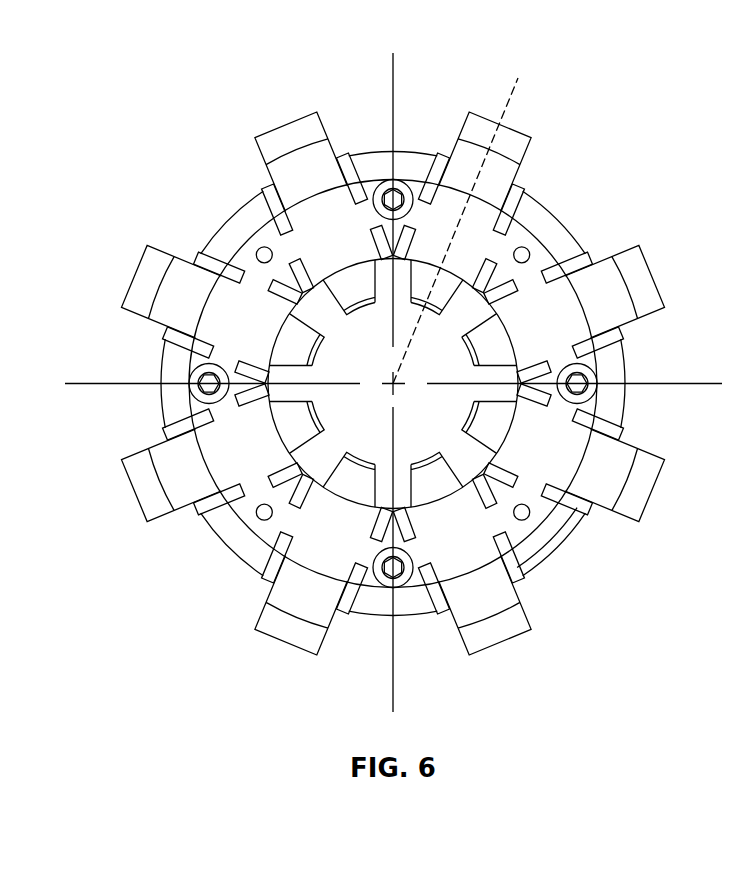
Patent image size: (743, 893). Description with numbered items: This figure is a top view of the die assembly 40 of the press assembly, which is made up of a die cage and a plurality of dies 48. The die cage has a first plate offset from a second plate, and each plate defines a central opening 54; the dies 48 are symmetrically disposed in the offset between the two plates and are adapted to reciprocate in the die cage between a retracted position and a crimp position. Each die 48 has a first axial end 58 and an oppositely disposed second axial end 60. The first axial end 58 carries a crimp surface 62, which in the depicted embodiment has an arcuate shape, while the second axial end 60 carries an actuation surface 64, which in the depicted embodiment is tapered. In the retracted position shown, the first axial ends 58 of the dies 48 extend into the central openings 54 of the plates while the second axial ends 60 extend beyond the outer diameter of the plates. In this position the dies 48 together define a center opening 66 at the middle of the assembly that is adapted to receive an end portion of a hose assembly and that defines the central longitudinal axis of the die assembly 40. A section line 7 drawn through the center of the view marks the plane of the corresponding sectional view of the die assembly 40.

The section line 7- 7 is at (518, 78).
The die assembly 40 is at (400, 372).
The die 48 is at (629, 264).
The central opening 54 is at (277, 428).
The first axial end 58 is at (469, 344).
The second axial end 60 is at (605, 295).
The crimp surface 62 is at (450, 354).
The actuation surface 64 is at (615, 291).
The center opening 66 is at (383, 398).